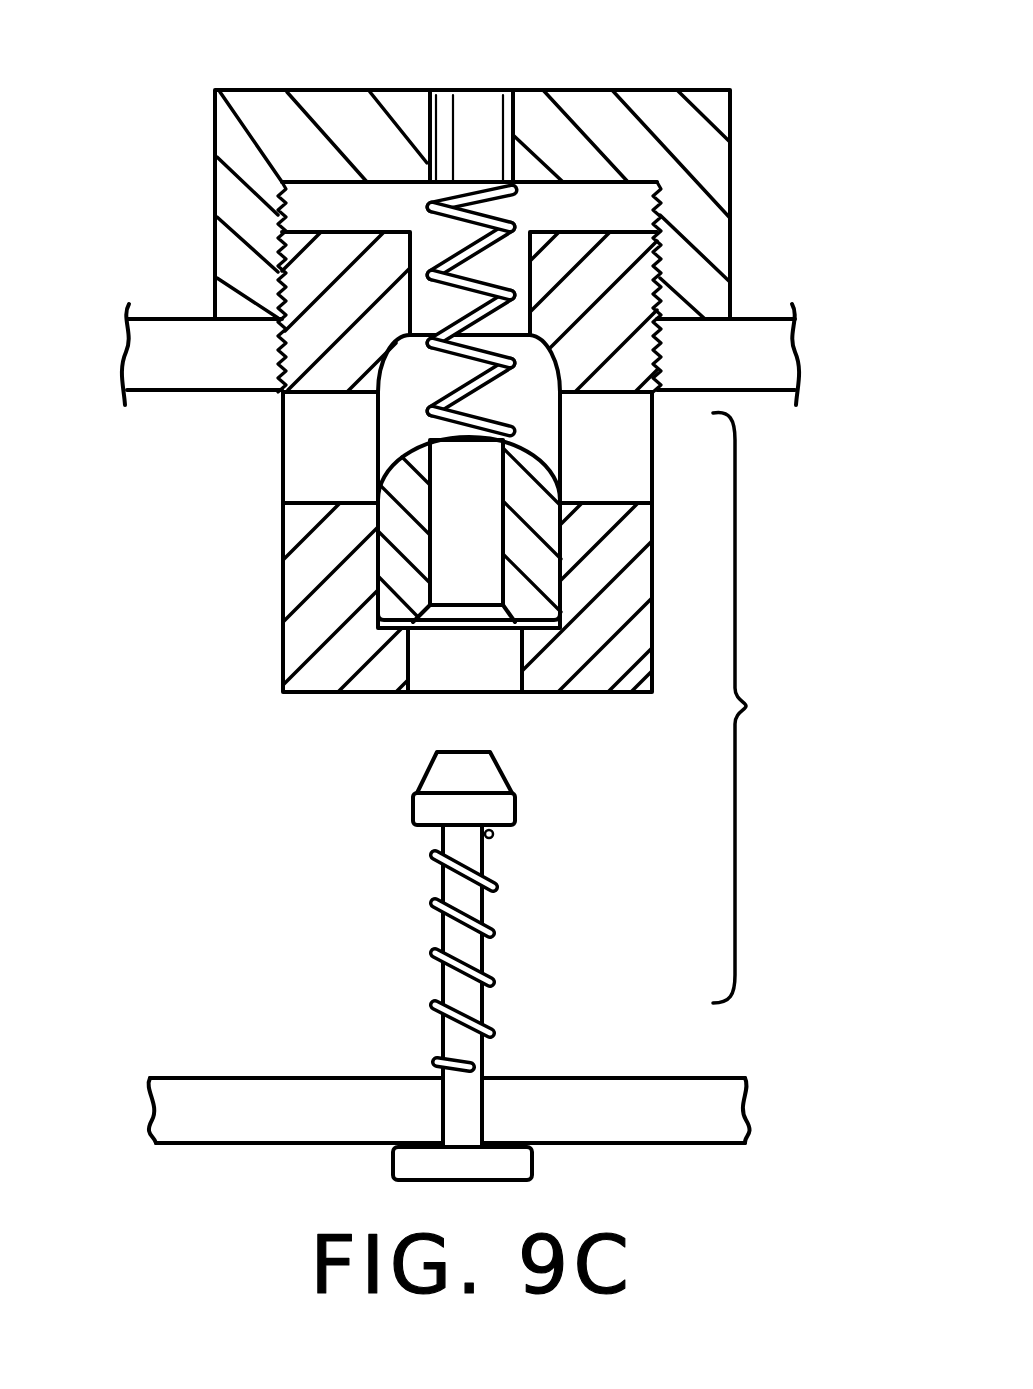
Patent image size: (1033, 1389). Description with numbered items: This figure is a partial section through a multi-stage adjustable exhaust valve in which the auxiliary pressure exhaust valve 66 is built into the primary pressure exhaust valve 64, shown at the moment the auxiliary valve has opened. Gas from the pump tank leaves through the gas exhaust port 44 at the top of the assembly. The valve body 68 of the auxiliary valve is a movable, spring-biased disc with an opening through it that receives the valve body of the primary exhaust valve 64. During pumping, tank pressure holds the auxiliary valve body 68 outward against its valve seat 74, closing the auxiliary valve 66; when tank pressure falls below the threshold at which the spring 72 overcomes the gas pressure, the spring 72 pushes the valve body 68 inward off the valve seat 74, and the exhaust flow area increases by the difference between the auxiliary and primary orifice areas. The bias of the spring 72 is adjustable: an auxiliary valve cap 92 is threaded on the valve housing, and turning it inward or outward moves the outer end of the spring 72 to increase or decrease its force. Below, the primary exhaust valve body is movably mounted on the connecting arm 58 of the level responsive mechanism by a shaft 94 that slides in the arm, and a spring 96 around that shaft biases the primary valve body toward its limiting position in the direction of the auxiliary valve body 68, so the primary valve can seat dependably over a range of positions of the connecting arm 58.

The gas exhaust port 44 is at (485, 110).
The spring 72 is at (445, 257).
The auxiliary valve cap 92 is at (698, 213).
The valve seat 74 is at (545, 338).
The auxiliary pressure exhaust valve 66 is at (350, 428).
The valve body 68 is at (530, 492).
The primary pressure exhaust valve 64 is at (416, 723).
The shaft 94 is at (467, 850).
The spring 96 is at (434, 902).
The connecting arm 58 is at (573, 1097).